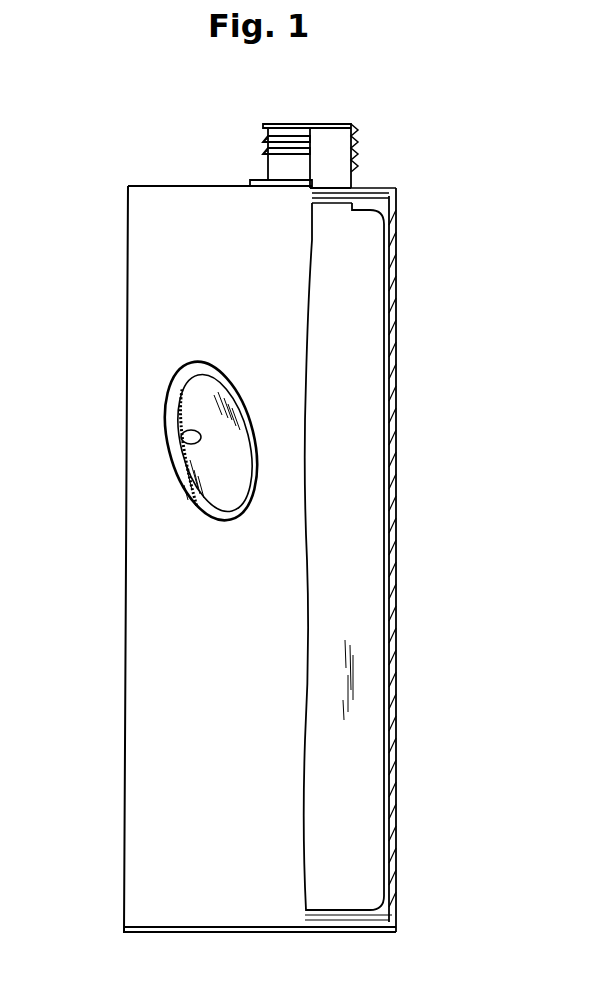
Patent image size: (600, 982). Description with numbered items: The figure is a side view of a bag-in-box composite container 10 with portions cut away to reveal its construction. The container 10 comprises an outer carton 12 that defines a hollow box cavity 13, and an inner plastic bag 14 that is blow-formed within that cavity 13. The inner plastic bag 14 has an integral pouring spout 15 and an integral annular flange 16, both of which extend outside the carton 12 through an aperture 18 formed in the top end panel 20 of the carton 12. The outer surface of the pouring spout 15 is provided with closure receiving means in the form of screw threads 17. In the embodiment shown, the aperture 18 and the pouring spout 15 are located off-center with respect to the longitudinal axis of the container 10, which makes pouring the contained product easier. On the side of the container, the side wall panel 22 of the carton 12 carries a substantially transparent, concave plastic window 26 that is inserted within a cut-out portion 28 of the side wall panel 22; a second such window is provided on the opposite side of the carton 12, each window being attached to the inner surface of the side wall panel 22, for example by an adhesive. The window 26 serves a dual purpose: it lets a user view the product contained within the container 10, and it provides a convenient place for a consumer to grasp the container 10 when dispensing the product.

The bag-in-box composite container 10 is at (433, 262).
The outer carton 12 is at (150, 253).
The hollow box cavity 13 is at (398, 203).
The inner plastic bag 14 is at (358, 471).
The pouring spout 15 is at (344, 140).
The annular flange 16 is at (255, 178).
The screw threads 17 is at (275, 143).
The aperture 18 is at (335, 192).
The top end panel 20 is at (150, 184).
The side wall panel 22 is at (148, 379).
The plastic window 26 is at (198, 462).
The cut-out portion 28 is at (182, 440).